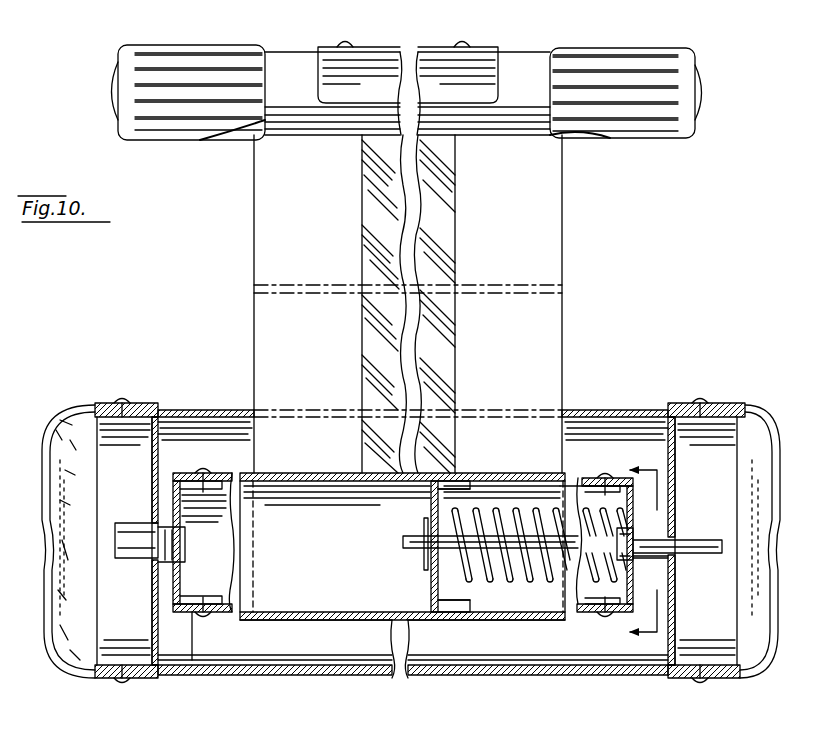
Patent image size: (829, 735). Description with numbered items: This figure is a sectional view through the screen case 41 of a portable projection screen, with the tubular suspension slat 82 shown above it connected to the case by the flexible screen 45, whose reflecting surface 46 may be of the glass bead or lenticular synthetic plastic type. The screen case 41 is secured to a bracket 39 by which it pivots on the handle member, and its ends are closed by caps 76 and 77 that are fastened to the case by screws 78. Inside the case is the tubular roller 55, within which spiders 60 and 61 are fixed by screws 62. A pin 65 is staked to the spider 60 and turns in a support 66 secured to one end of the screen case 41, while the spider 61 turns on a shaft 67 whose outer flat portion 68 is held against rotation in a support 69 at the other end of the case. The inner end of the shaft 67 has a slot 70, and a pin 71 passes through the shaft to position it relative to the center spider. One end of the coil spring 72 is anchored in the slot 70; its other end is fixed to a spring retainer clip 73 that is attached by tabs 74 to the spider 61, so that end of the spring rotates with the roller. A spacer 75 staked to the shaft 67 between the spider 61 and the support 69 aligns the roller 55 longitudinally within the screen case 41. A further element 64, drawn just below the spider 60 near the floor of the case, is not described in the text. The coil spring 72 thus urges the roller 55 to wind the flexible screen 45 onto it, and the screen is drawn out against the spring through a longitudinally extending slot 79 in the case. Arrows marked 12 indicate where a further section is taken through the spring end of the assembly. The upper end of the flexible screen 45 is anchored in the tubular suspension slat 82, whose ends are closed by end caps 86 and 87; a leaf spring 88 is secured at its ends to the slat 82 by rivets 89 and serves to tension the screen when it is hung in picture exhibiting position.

The section line 12- 12 is at (648, 550).
The bracket 39 is at (314, 676).
The screen case 41 is at (200, 677).
The flexible screen 45 is at (565, 253).
The reflecting surface 46 is at (460, 253).
The tubular roller 55 is at (320, 485).
The spider 60 is at (182, 572).
The spider 61 is at (632, 492).
The screws 62 is at (203, 470).
The pin 64 is at (200, 615).
The pin 65 is at (128, 530).
The support 66 is at (150, 461).
The shaft 67 is at (538, 575).
The flat portion 68 is at (431, 585).
The support 69 is at (677, 496).
The slot 70 is at (403, 547).
The pin 71 is at (424, 567).
The coil spring 72 is at (482, 598).
The spring retainer clip 73 is at (632, 586).
The tabs 74 is at (632, 566).
The spacer 75 is at (636, 560).
The cap 76 is at (46, 462).
The cap 77 is at (394, 524).
The screws 78 is at (121, 436).
The slot 79 is at (240, 410).
The tubular suspension slat 82 is at (407, 73).
The end cap 86 is at (166, 52).
The end cap 87 is at (665, 50).
The leaf spring 88 is at (492, 52).
The rivets 89 is at (344, 44).